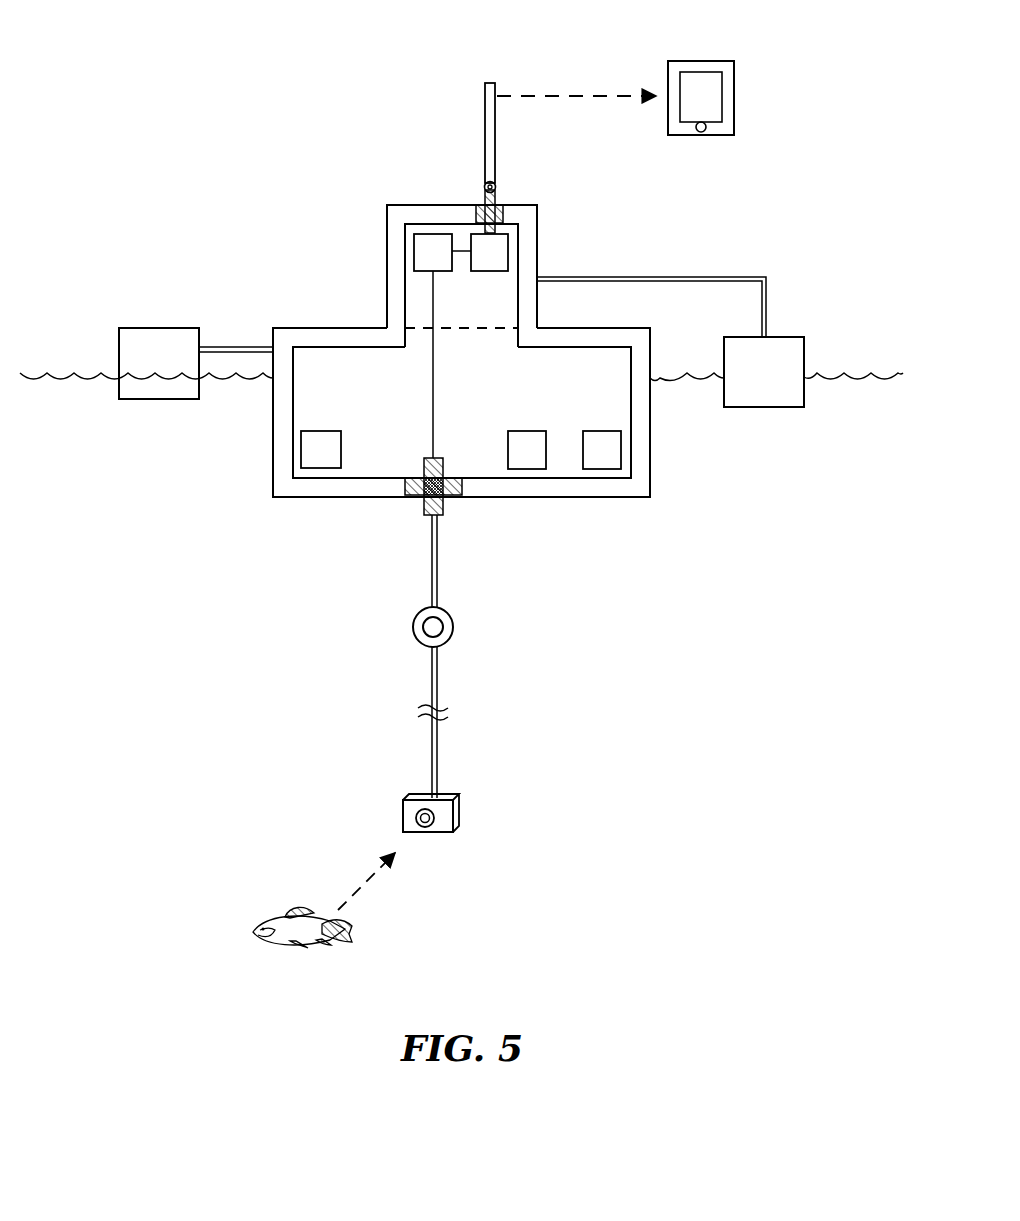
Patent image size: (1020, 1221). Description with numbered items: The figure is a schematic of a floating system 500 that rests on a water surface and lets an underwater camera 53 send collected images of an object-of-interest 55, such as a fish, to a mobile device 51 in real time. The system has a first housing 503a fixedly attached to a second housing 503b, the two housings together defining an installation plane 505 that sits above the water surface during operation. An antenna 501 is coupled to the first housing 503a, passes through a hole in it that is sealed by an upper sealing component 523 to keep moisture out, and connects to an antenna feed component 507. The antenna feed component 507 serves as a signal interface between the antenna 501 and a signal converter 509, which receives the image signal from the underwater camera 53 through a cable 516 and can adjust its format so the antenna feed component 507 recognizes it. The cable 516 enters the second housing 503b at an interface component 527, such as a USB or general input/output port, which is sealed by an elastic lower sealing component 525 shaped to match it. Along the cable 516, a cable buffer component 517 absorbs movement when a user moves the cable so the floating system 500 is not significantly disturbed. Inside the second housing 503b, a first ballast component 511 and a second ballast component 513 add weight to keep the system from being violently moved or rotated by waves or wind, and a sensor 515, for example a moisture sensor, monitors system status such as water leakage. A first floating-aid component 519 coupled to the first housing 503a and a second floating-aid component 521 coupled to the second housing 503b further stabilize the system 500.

The floating system 500 is at (110, 114).
The antenna 501 is at (490, 98).
The mobile device 51 is at (737, 70).
The upper sealing component 523 is at (484, 208).
The signal converter 509 is at (437, 242).
The first housing 503a is at (530, 215).
The antenna feed component 507 is at (500, 255).
The installation plane 505 is at (416, 320).
The first floating-aid component 519 is at (165, 328).
The second floating-aid component 521 is at (790, 337).
The second housing 503b is at (639, 470).
The second ballast component 513 is at (320, 470).
The sensor 515 is at (527, 470).
The first ballast component 511 is at (600, 470).
The lower sealing component 525 is at (411, 493).
The interface component 527 is at (428, 496).
The cable buffer component 517 is at (453, 613).
The cable 516 is at (433, 678).
The underwater camera 53 is at (458, 810).
The object-of-interest 55 is at (350, 930).